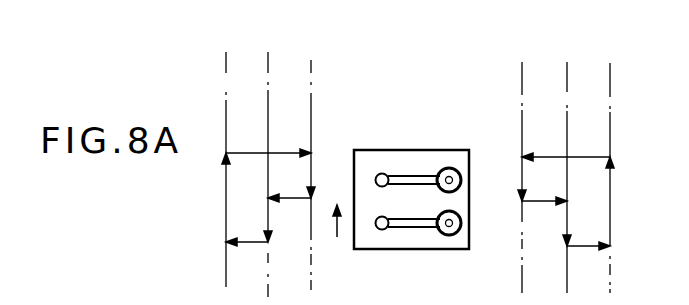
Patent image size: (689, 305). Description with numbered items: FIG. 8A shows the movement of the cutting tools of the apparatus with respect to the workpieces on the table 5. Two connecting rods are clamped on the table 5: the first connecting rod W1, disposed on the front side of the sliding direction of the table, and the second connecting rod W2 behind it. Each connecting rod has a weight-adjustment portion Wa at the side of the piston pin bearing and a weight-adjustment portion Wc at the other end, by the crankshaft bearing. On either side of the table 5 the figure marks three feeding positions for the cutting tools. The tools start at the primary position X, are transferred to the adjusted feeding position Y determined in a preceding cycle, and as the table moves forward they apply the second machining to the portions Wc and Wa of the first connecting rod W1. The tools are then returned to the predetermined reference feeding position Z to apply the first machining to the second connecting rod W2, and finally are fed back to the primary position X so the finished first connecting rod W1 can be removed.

The primary position X is at (226, 73).
The adjusted feeding position Y is at (311, 68).
The reference feeding position Z is at (268, 72).
The table 5 is at (399, 158).
The first connecting rod W1 is at (422, 178).
The second connecting rod W2 is at (418, 228).
The weight-adjustment portion Wa is at (376, 221).
The weight-adjustment portion Wc is at (463, 217).